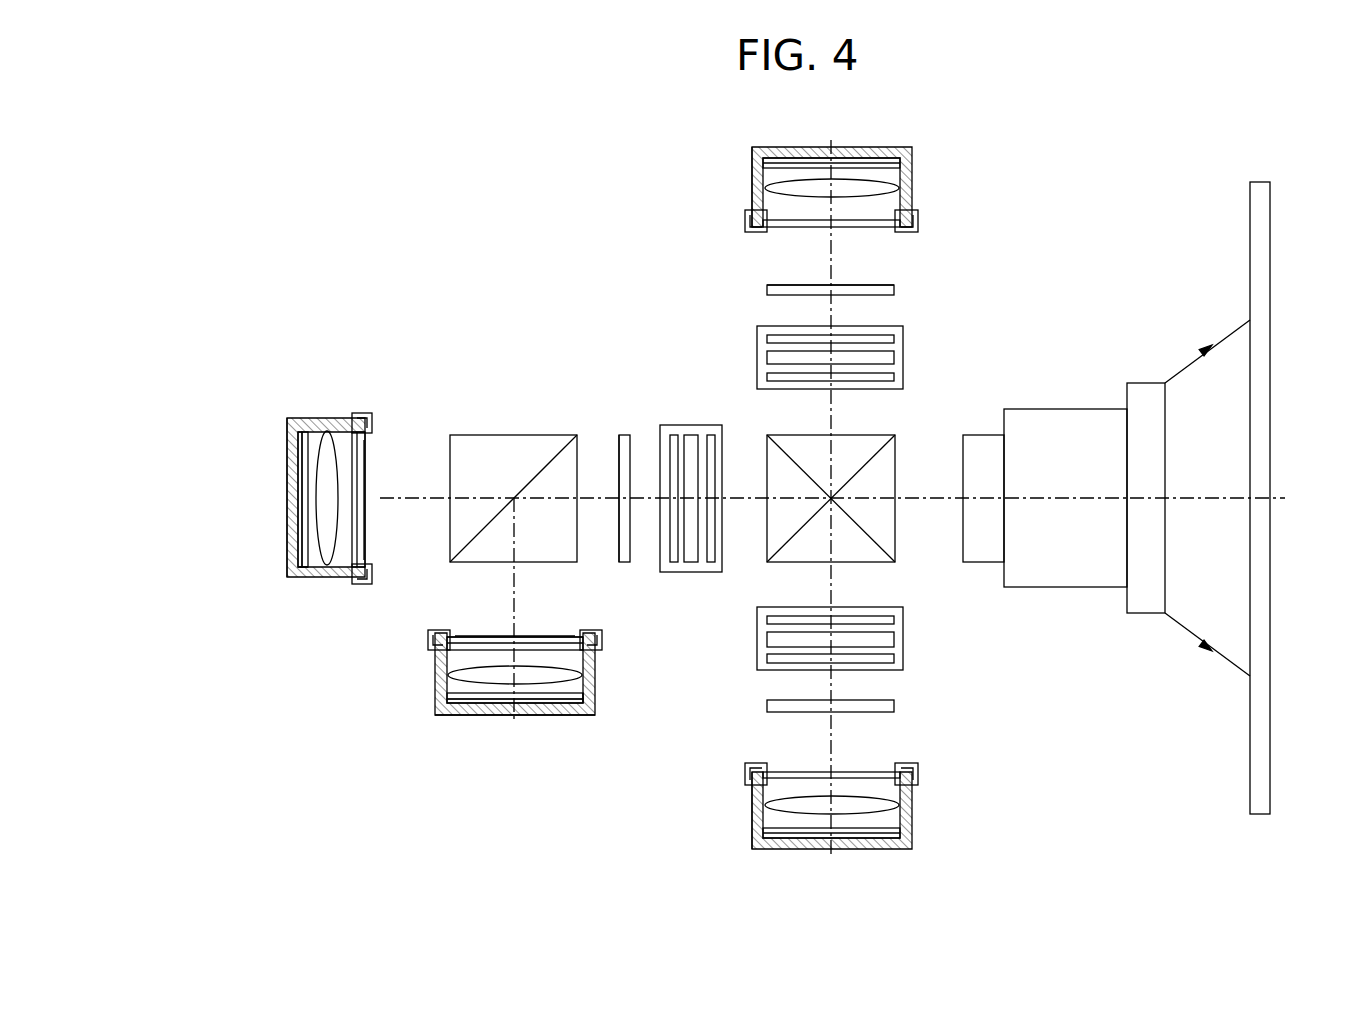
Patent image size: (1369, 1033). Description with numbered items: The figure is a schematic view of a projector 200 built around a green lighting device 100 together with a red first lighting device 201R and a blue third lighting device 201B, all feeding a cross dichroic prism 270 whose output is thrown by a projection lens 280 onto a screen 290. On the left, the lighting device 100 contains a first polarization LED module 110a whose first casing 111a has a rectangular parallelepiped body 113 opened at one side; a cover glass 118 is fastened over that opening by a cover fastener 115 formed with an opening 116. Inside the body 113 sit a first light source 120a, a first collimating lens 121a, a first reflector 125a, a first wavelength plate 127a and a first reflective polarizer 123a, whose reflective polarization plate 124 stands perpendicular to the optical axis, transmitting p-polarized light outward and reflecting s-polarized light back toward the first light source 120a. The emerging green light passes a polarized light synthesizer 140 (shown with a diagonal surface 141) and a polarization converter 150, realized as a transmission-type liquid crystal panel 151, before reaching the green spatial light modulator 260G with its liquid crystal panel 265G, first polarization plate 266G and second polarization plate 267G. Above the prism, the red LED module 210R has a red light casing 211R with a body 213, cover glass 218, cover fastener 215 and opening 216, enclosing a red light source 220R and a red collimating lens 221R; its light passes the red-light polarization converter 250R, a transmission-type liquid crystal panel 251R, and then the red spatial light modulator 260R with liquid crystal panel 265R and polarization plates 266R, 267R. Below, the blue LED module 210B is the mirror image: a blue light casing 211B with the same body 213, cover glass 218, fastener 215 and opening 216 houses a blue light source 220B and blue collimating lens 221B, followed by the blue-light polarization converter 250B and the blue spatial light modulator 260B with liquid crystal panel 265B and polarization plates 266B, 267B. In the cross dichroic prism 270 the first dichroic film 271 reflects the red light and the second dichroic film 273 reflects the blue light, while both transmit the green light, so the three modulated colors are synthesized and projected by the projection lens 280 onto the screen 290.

The lighting device 100 is at (428, 294).
The first polarization LED module 110a is at (435, 567).
The first casing 111a is at (274, 490).
The body 113 is at (292, 448).
The cover fastener 115 is at (358, 413).
The opening 116 is at (366, 432).
The cover glass 118 is at (365, 476).
The first light source 120a is at (306, 550).
The first collimating lens 121a is at (302, 566).
The first reflective polarizer 123a is at (372, 508).
The reflective polarization plate 124 is at (356, 585).
The first reflector 125a is at (300, 525).
The first wavelength plate 127a is at (330, 572).
The polarized light synthesizer 140 is at (513, 451).
The dichroic surface 141 is at (542, 468).
The polarization converter 150 is at (600, 451).
The transmission-type liquid crystal panel 151 is at (619, 440).
The projector 200 is at (1132, 171).
The first lighting device 201R is at (873, 207).
The third lighting device 201B is at (925, 791).
The red LED module 210R is at (892, 173).
The blue LED module 210B is at (892, 824).
The red light casing 211R is at (870, 147).
The blue light casing 211B is at (872, 849).
The body 213 is at (760, 155).
The cover fastener 215 is at (748, 212).
The opening 216 is at (763, 232).
The cover glass 218 is at (797, 225).
The red light source 220R is at (883, 160).
The blue light source 220B is at (886, 835).
The red-light collimating lens 221R is at (888, 183).
The blue collimating lens 221B is at (890, 814).
The red-light polarization converter 250R is at (840, 290).
The blue-light polarization converter 250B is at (930, 700).
The transmission-type liquid crystal panel 251R is at (767, 290).
The spatial light modulator for red light 260R is at (840, 358).
The spatial light modulator for green light 260G is at (703, 523).
The spatial light modulator for blue light 260B is at (894, 621).
The liquid crystal panel 265R is at (767, 339).
The first polarization plate 266R is at (767, 358).
The second polarization plate 267R is at (767, 377).
The liquid crystal panel 265G is at (672, 563).
The first polarization plate 266G is at (690, 563).
The second polarization plate 267G is at (711, 563).
The liquid crystal panel 265B is at (885, 657).
The first polarization plate 266B is at (882, 636).
The second polarization plate 267B is at (862, 618).
The cross dichroic prism 270 is at (865, 476).
The first dichroic film 271 is at (870, 537).
The second dichroic film 273 is at (870, 460).
The projection lens 280 is at (1133, 365).
The screen 290 is at (1271, 648).